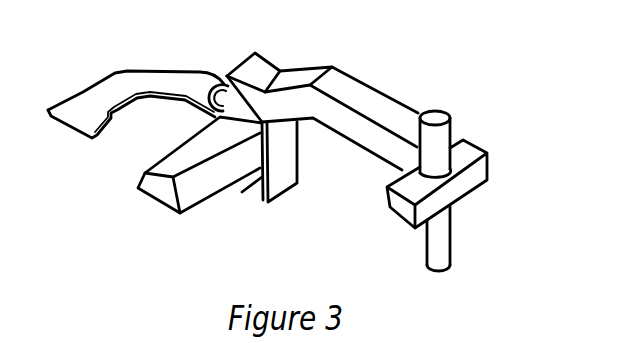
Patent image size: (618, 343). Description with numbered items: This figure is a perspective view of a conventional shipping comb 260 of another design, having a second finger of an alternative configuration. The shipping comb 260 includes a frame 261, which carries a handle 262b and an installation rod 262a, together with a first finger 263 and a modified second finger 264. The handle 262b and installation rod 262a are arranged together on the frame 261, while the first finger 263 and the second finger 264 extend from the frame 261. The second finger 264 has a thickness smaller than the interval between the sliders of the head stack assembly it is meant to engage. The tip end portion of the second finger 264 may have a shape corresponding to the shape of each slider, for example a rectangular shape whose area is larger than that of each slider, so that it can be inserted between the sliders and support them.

The shipping comb 260 is at (475, 151).
The frame 261 is at (344, 87).
The installation rod 262a is at (447, 237).
The handle 262b is at (442, 140).
The first finger 263 is at (210, 187).
The second finger 264 is at (83, 108).